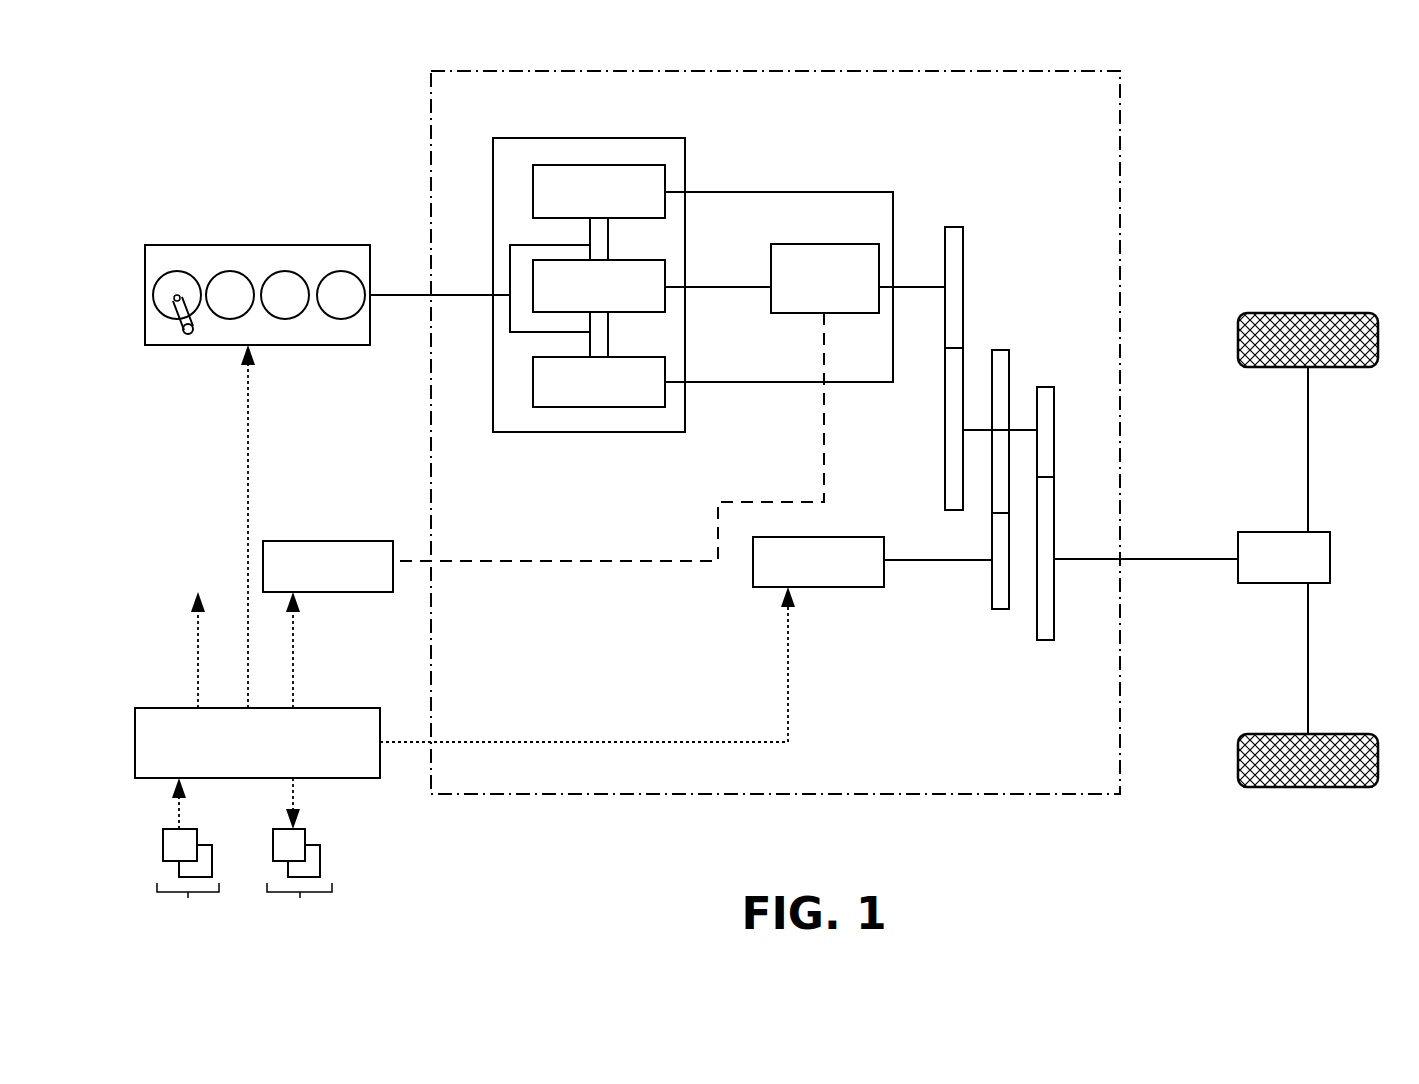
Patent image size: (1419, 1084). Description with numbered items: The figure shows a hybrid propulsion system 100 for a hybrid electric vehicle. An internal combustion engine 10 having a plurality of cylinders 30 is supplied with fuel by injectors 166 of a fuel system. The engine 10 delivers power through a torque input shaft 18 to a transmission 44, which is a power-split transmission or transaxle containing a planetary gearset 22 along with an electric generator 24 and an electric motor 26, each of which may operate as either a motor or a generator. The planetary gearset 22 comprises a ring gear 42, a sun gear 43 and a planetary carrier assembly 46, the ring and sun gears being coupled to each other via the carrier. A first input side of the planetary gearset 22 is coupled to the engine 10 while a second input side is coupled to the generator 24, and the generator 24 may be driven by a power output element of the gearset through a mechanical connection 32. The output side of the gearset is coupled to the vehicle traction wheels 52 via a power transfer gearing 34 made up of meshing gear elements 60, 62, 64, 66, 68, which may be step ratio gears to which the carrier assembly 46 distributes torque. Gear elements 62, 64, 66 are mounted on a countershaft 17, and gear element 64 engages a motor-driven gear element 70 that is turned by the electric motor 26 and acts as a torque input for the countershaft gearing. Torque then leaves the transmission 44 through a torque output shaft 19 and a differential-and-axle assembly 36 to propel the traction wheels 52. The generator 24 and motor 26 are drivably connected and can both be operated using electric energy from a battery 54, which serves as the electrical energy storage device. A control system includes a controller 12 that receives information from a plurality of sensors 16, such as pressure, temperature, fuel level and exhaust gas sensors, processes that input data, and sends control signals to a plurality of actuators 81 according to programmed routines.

The hybrid propulsion system 100 is at (1338, 160).
The transmission 44 is at (1120, 118).
The internal combustion engine 10 is at (257, 296).
The cylinders 30 is at (165, 270).
The injectors 166 is at (178, 333).
The torque input shaft 18 is at (376, 294).
The planetary gearset 22 is at (589, 268).
The ring gear 42 is at (599, 286).
The sun gear 43 is at (599, 286).
The planetary carrier assembly 46 is at (602, 250).
The mechanical connection 32 is at (700, 287).
The electric generator 24 is at (825, 278).
The power transfer gearing 34 is at (999, 424).
The meshing gear element 60 is at (954, 227).
The gear element 62 is at (945, 446).
The gear element 64 is at (1000, 350).
The gear element 66 is at (1054, 415).
The meshing gear element 68 is at (1045, 640).
The electric motor-driven gear element 70 is at (1000, 609).
The countershaft 17 is at (972, 430).
The electric motor 26 is at (818, 562).
The torque output shaft 19 is at (1146, 559).
The differential-and-axle assembly 36 is at (1284, 557).
The vehicle traction wheels 52 is at (1290, 313).
The battery 54 is at (328, 566).
The controller 12 is at (465, 561).
The sensors 16 is at (182, 860).
The actuators 81 is at (296, 860).